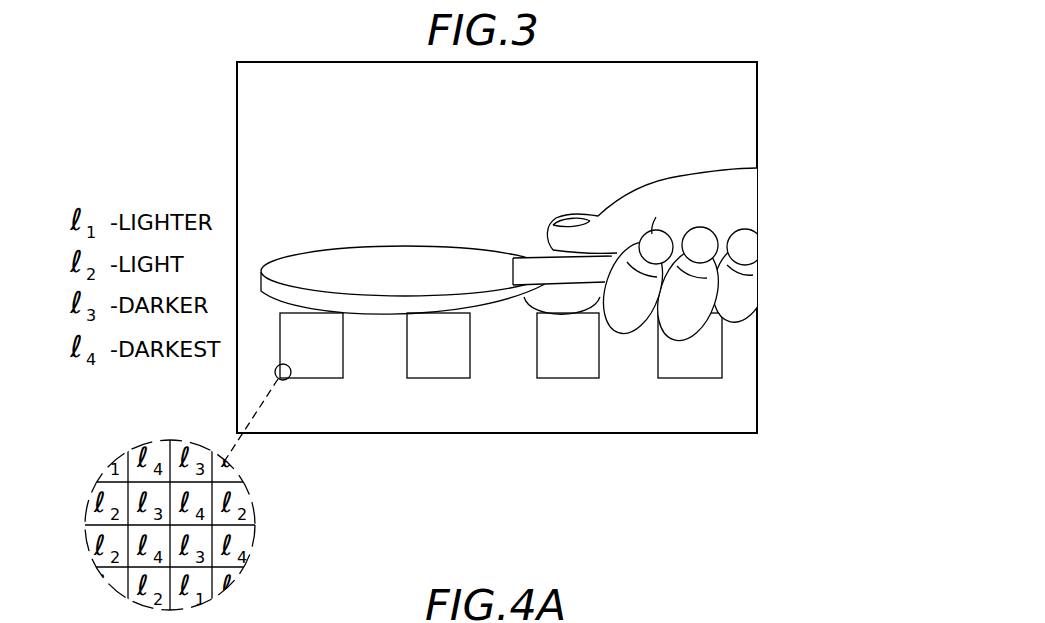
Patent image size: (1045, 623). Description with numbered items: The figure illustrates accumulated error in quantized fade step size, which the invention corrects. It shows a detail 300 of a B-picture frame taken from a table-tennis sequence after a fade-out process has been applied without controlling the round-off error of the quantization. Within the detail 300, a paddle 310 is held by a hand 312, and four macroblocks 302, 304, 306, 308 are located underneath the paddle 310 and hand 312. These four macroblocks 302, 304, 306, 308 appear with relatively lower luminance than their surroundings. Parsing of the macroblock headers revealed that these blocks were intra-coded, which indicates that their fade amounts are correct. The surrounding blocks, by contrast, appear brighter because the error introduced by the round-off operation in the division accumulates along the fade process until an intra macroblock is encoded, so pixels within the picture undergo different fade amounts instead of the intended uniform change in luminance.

The detail 300 is at (792, 73).
The macroblock 302 is at (322, 440).
The macroblock 304 is at (455, 440).
The macroblock 306 is at (590, 440).
The macroblock 308 is at (729, 440).
The paddle 310 is at (275, 53).
The hand 312 is at (786, 197).